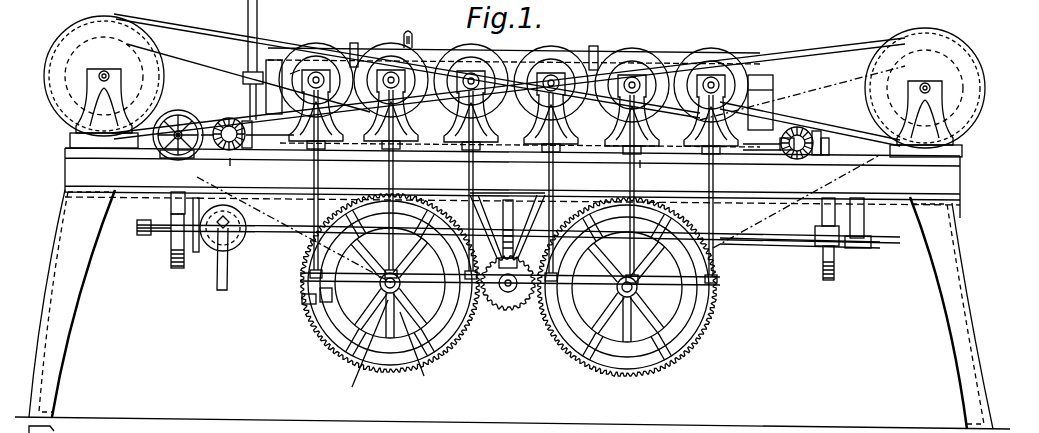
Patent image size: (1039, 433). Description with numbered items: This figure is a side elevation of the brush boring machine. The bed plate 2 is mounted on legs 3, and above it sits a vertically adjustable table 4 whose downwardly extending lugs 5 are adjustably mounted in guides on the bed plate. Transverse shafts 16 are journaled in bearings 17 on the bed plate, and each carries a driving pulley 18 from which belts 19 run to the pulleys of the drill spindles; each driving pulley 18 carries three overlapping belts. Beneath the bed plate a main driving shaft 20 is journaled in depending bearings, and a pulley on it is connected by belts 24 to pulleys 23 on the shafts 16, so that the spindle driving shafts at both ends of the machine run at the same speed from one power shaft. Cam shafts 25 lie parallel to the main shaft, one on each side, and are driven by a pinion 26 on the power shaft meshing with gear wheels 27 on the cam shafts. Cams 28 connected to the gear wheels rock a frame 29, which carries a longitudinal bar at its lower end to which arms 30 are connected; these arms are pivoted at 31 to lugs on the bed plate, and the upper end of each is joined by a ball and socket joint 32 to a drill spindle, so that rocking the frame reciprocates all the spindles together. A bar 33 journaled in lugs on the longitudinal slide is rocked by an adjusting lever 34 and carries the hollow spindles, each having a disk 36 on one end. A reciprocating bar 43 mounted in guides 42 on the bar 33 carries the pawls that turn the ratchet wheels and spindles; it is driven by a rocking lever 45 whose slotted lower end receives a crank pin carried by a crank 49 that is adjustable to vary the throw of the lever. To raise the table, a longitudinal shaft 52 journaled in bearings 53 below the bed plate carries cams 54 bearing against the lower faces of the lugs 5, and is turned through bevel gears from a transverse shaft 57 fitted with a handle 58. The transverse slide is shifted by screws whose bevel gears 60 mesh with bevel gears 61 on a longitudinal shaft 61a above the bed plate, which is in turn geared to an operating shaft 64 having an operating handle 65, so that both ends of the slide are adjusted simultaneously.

The bed plate 2 is at (955, 182).
The legs 3 is at (54, 303).
The vertically adjusted table 4 is at (437, 130).
The lugs 5 is at (178, 212).
The transverse shafts 16 is at (104, 70).
The bearings 17 is at (74, 124).
The driving pulley 18 is at (52, 96).
The belts 19 is at (208, 42).
The main driving shaft 20 is at (502, 300).
The pulleys 23 is at (64, 76).
The belts 24 is at (267, 233).
The cam shafts 25 is at (332, 330).
The pinion 26 is at (509, 295).
The gear wheels 27 is at (402, 374).
The cams 28 is at (310, 300).
The frame 29 is at (318, 290).
The arms 30 is at (316, 195).
The pivots 31 is at (310, 166).
The ball and socket joint 32 is at (716, 78).
The bar 33 is at (276, 68).
The adjusting lever 34 is at (262, 28).
The disk 36 is at (325, 48).
The guides 42 is at (358, 48).
The reciprocating bar 43 is at (522, 58).
The rocking lever 45 is at (410, 30).
The crank 49 is at (428, 355).
The longitudinal shaft 52 is at (786, 246).
The bearings 53 is at (144, 236).
The cams 54 is at (178, 270).
The transverse shaft 57 is at (233, 244).
The handle 58 is at (223, 291).
The bevel gears 60 is at (228, 151).
The bevel gears 61 is at (247, 149).
The longitudinal shaft 61a is at (786, 152).
The operating shaft 64 is at (166, 156).
The operating handle 65 is at (191, 117).